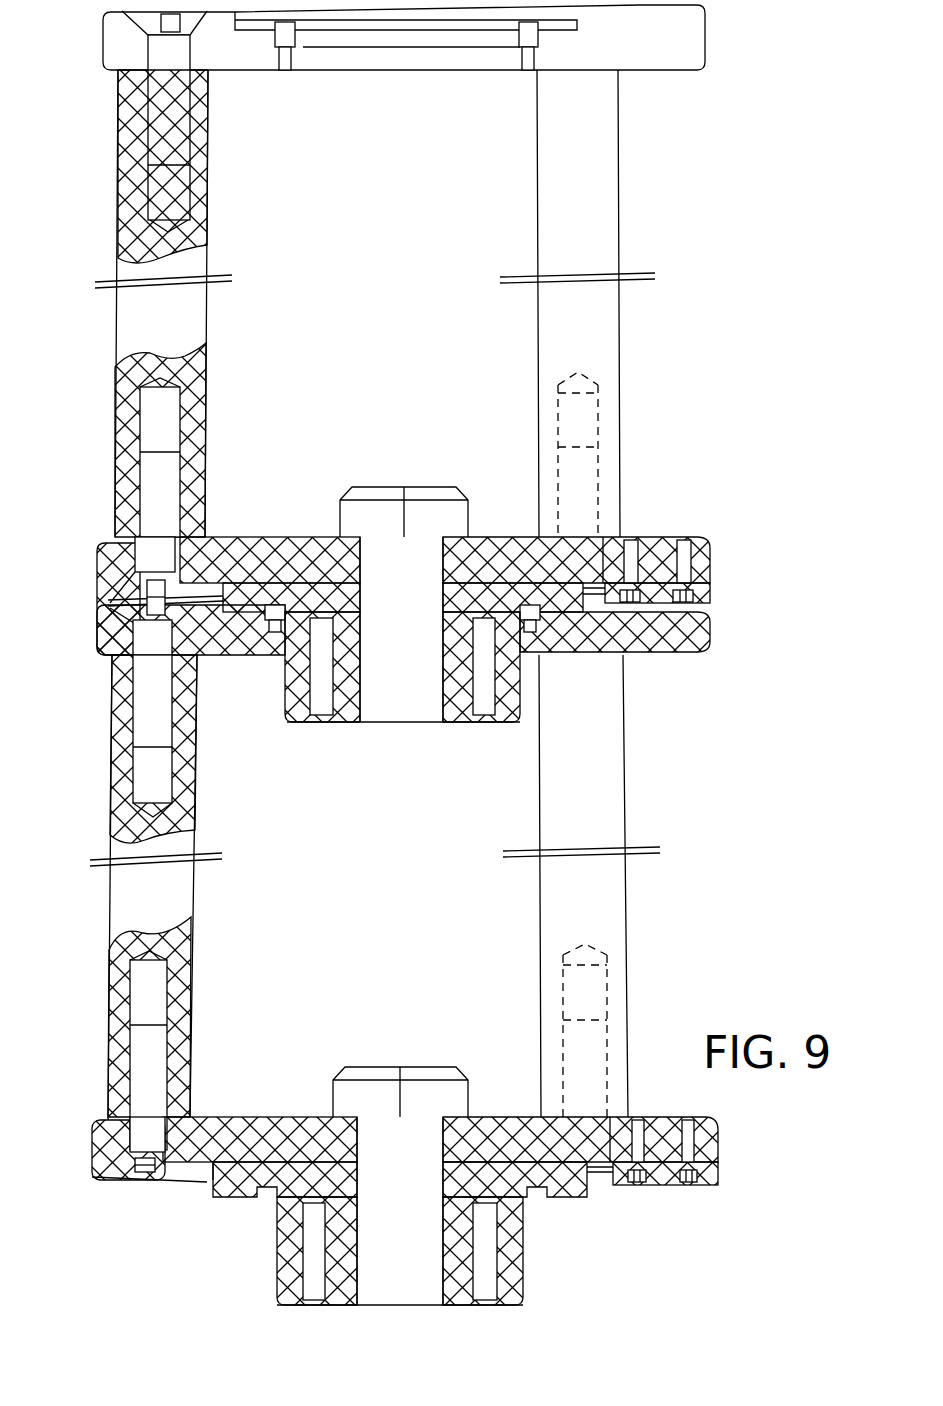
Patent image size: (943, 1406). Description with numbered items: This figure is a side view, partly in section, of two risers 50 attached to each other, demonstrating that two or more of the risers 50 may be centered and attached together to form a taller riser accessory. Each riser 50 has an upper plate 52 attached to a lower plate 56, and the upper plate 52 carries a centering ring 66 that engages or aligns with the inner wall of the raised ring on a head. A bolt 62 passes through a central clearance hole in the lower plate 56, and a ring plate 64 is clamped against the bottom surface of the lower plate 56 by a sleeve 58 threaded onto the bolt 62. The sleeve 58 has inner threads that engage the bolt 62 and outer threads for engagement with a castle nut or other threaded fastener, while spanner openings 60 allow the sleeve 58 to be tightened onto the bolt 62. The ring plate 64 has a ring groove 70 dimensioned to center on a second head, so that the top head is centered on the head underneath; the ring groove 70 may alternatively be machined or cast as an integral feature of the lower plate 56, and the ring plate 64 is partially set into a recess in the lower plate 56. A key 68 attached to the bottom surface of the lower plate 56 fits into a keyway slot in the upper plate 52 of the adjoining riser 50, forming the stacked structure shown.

The riser 50 is at (676, 316).
The upper plate 52 is at (703, 634).
The lower plate 56 is at (658, 548).
The sleeve 58 is at (300, 707).
The spanner openings 60 is at (483, 1287).
The bolt 62 is at (420, 690).
The ring plate 64 is at (567, 604).
The centering ring 66 is at (278, 38).
The key 68 is at (702, 590).
The ring groove 70 is at (262, 1210).